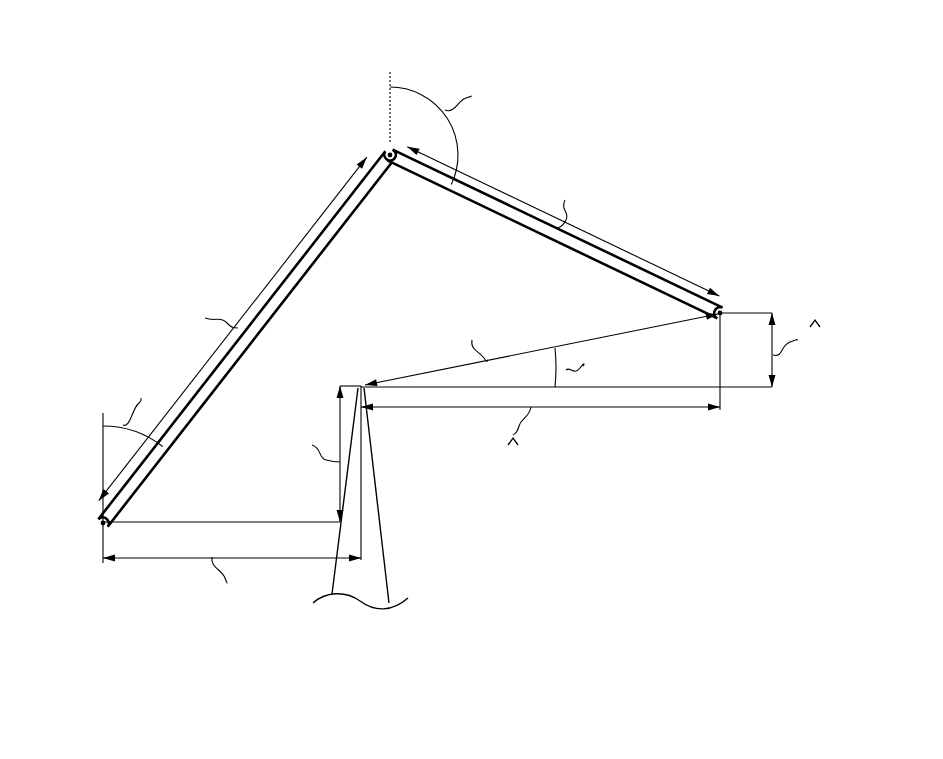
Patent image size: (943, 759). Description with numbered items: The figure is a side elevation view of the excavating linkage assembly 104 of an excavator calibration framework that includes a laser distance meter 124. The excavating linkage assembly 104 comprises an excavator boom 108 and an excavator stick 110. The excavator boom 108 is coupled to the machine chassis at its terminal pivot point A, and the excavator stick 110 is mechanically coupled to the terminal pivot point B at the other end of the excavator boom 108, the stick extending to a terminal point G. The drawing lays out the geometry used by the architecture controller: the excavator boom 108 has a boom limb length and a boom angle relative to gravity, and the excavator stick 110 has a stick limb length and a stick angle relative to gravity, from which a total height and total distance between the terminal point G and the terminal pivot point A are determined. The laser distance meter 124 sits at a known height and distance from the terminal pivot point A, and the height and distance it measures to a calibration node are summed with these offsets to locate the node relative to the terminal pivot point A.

The excavating linkage assembly 104 is at (188, 135).
The excavator boom 108 is at (260, 335).
The excavator stick 110 is at (482, 210).
The laser distance meter (LDM) 124 is at (382, 540).
The terminal pivot point of the excavator boom A is at (98, 523).
The terminal pivot point of the excavator boom B is at (384, 150).
The terminal point G is at (724, 310).